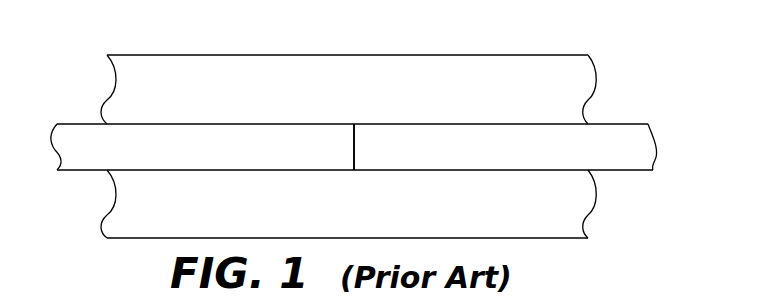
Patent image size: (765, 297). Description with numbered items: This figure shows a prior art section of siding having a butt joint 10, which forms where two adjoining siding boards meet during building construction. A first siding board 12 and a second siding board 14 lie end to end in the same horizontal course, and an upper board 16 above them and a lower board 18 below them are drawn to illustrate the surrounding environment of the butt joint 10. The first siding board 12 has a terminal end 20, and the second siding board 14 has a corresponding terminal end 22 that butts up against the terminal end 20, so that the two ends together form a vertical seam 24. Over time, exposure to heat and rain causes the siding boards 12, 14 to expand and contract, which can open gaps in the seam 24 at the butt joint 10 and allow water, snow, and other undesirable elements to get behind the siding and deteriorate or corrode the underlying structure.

The butt joint 10 is at (385, 147).
The first siding board 12 is at (98, 143).
The second siding board 14 is at (632, 151).
The upper board 16 is at (558, 65).
The lower board 18 is at (530, 220).
The terminal end 20 is at (352, 141).
The terminal end 22 is at (366, 146).
The vertical seam 24 is at (356, 119).